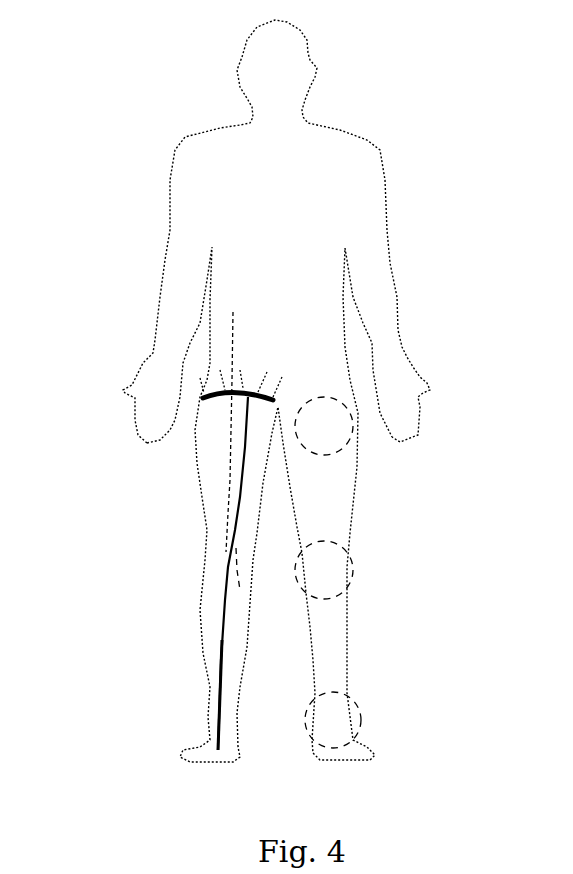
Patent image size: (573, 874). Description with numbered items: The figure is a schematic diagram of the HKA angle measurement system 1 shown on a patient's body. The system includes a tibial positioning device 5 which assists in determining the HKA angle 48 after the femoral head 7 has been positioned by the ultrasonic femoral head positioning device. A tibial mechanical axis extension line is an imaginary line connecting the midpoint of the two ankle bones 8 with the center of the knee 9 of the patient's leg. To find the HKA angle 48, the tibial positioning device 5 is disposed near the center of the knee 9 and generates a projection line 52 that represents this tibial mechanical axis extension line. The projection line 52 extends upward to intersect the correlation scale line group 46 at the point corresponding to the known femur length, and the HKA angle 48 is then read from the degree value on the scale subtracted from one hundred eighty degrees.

The HKA angle measurement system 1 is at (87, 50).
The correlation scale line group 46 is at (230, 395).
The projection line 52 is at (228, 500).
The tibial positioning device 5 is at (213, 683).
The femoral head 7 is at (347, 447).
The knee 9 is at (353, 580).
The HKA angle 48 is at (240, 588).
The ankle bones 8 is at (358, 720).